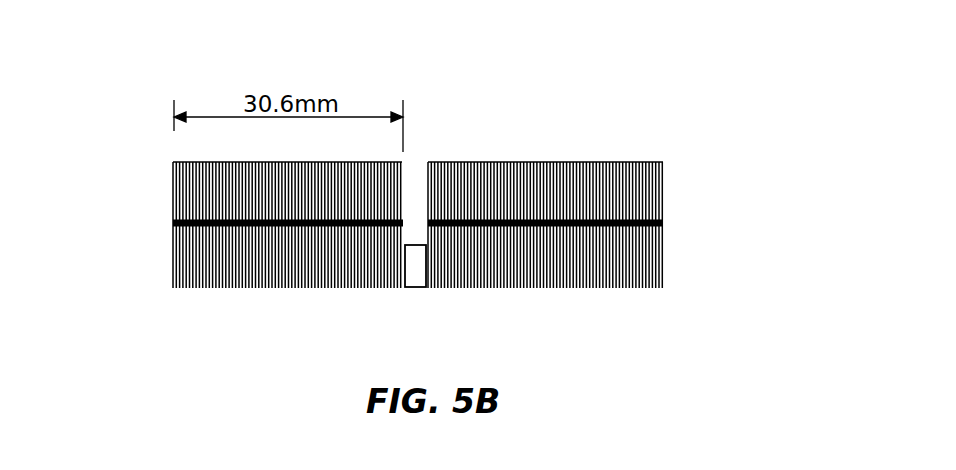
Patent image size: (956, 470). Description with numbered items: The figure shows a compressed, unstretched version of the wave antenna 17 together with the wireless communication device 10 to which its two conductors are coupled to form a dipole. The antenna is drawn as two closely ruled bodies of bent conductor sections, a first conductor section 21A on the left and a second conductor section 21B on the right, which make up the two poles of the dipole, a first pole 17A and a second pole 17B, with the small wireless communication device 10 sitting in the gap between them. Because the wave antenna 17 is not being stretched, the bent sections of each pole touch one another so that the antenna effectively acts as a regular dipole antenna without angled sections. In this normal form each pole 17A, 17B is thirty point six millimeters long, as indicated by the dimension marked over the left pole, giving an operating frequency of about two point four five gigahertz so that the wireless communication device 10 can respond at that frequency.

The wave antenna 17 is at (686, 119).
The first pole of the wave antenna 17A is at (173, 205).
The second pole of the wave antenna 17B is at (651, 186).
The first conductor section 21A is at (183, 163).
The second conductor section 21B is at (535, 167).
The wireless communication device 10 is at (413, 258).